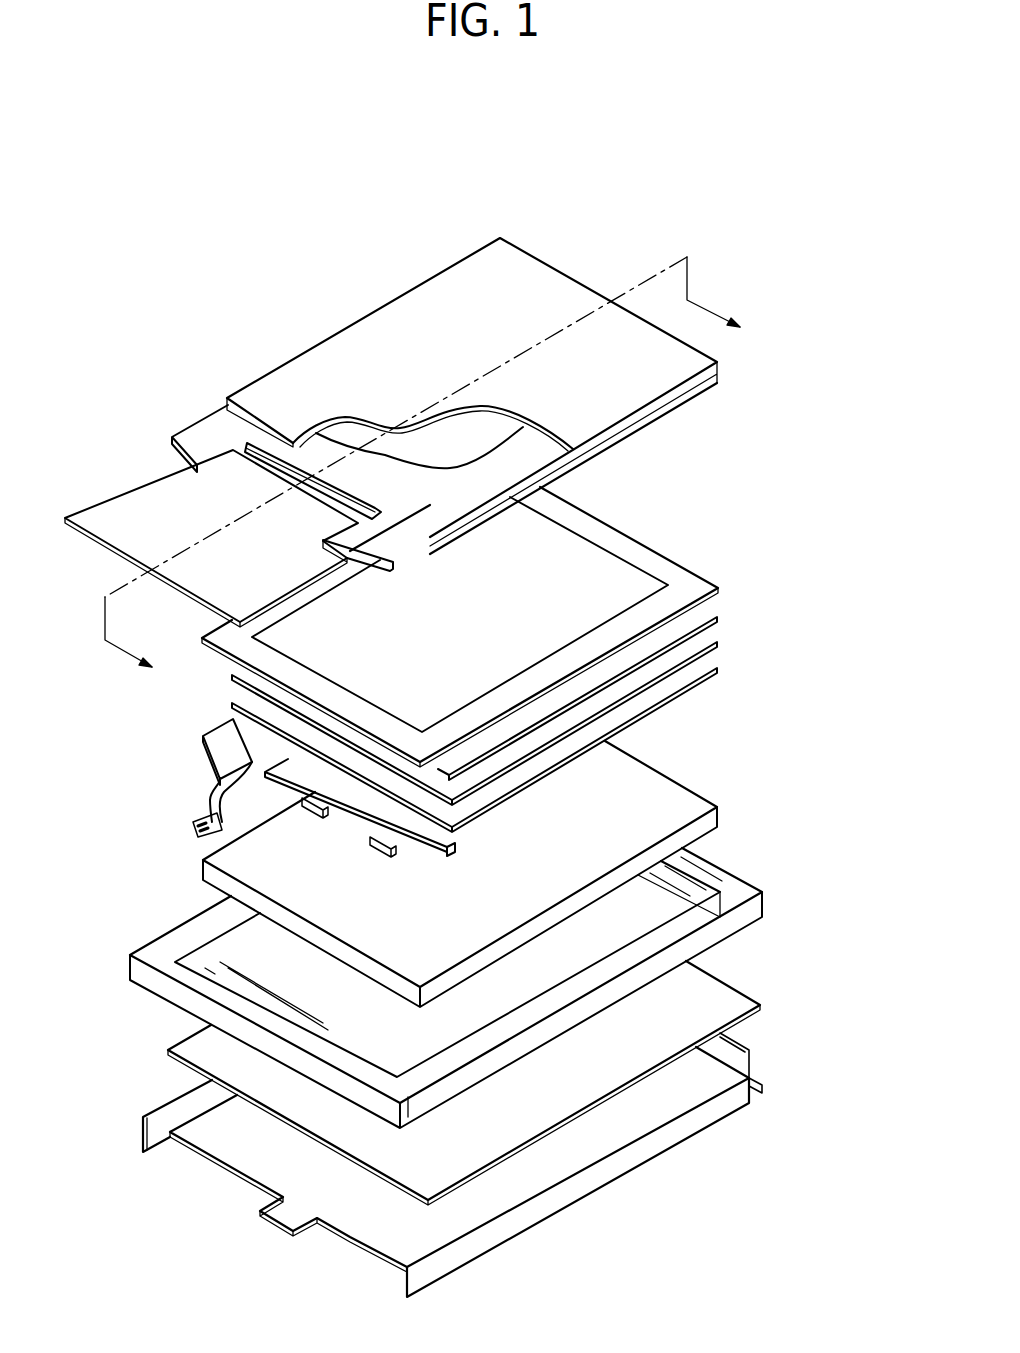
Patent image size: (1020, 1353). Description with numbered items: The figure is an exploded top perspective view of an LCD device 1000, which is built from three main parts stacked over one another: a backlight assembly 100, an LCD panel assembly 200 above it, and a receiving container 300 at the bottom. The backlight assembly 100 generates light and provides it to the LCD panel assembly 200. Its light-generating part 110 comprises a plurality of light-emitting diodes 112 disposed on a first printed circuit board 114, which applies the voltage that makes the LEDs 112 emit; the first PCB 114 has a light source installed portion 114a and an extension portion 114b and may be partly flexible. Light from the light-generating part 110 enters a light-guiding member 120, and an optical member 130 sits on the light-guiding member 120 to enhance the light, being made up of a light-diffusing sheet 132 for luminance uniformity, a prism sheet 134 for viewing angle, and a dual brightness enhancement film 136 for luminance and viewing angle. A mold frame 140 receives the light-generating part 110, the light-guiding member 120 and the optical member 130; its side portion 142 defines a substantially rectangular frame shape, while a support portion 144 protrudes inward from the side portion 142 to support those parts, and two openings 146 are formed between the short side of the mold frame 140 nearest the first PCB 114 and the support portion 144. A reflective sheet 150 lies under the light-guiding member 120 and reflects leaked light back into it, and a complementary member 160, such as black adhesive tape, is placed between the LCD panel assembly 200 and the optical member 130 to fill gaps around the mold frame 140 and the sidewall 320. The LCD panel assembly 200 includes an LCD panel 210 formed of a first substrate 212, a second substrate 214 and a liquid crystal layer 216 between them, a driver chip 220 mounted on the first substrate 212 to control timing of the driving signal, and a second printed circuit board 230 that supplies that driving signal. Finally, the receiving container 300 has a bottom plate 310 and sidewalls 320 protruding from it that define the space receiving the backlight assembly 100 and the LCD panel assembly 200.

The LCD device 1000 is at (539, 126).
The backlight assembly 100 is at (852, 1010).
The light-generating part 110 is at (464, 841).
The light-emitting diodes 112 is at (360, 838).
The first printed circuit board 114 is at (100, 760).
The light source installed portion 114a is at (227, 743).
The extension portion 114b is at (220, 795).
The light-guiding member 120 is at (720, 808).
The optical member 130 is at (791, 598).
The light-diffusing sheet 132 is at (716, 665).
The prism sheet 134 is at (716, 638).
The dual brightness enhancement film 136 is at (717, 617).
The mold frame 140 is at (776, 887).
The side portion 142 is at (132, 960).
The support portion 144 is at (223, 968).
The opening 146 is at (213, 975).
The reflective sheet 150 is at (742, 1000).
The complementary member 160 is at (688, 570).
The LCD panel assembly 200 is at (190, 273).
The LCD panel 210 is at (274, 278).
The first substrate 212 is at (222, 412).
The second substrate 214 is at (328, 342).
The liquid crystal layer 216 is at (293, 442).
The driver chip 220 is at (210, 416).
The second printed circuit board 230 is at (150, 483).
The receiving container 300 is at (700, 1209).
The bottom plate 310 is at (580, 1148).
The sidewall 320 is at (517, 1220).